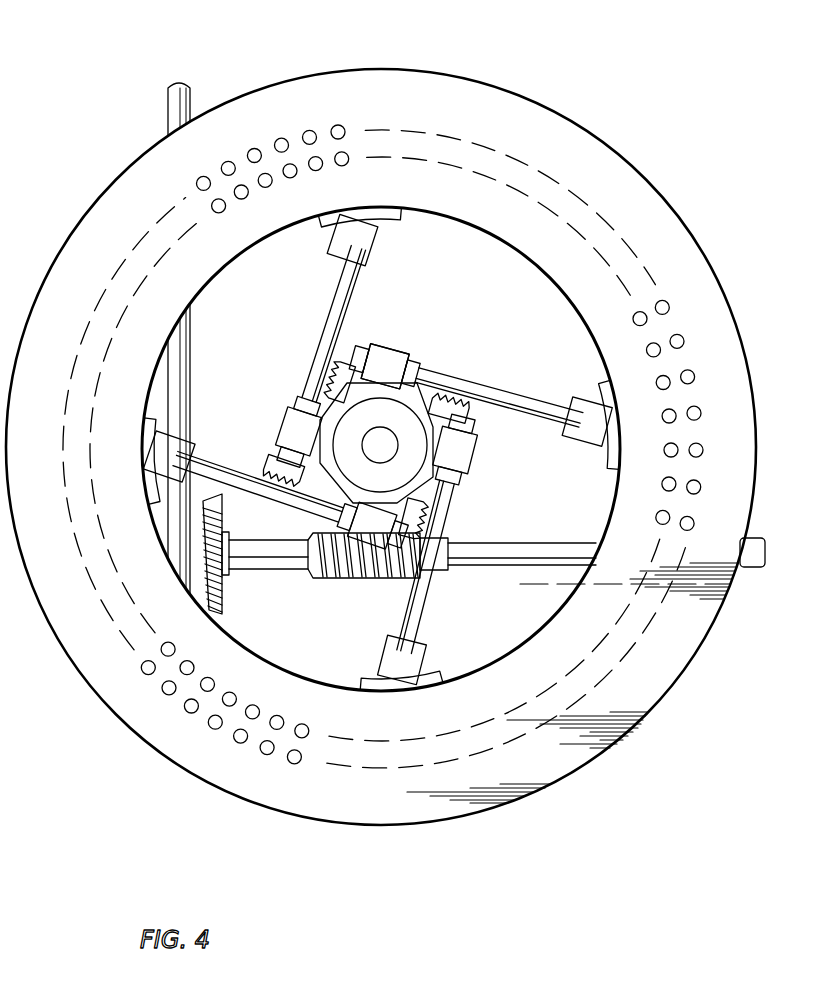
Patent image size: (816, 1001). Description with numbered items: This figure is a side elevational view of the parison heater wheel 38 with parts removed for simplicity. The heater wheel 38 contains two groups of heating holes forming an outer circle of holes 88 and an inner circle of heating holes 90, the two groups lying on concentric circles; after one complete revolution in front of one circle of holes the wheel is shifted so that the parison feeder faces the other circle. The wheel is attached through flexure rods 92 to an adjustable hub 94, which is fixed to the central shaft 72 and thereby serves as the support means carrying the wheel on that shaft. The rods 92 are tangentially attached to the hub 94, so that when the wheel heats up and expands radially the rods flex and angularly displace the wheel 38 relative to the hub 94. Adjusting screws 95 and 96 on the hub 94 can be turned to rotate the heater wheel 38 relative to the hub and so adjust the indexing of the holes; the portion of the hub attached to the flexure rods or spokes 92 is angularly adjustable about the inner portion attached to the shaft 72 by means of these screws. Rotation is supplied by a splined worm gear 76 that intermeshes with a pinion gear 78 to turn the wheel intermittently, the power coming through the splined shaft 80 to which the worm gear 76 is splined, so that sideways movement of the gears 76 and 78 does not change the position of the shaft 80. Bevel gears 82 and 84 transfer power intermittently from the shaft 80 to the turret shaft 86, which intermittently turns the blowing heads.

The parison heater wheel 38 is at (624, 101).
The shaft 72 is at (392, 455).
The splined worm gear 76 is at (366, 574).
The pinion gear 78 is at (296, 481).
The splined shaft 80 is at (498, 542).
The bevel gear 82 is at (229, 594).
The bevel gear 84 is at (222, 614).
The turret shaft 86 is at (192, 340).
The outer circle of holes 88 is at (300, 763).
The inner circle of heating holes 90 is at (309, 724).
The flexure rods 92 is at (503, 388).
The adjustable hub 94 is at (416, 398).
The adjusting screw 95 is at (346, 368).
The adjusting screw 96 is at (418, 384).